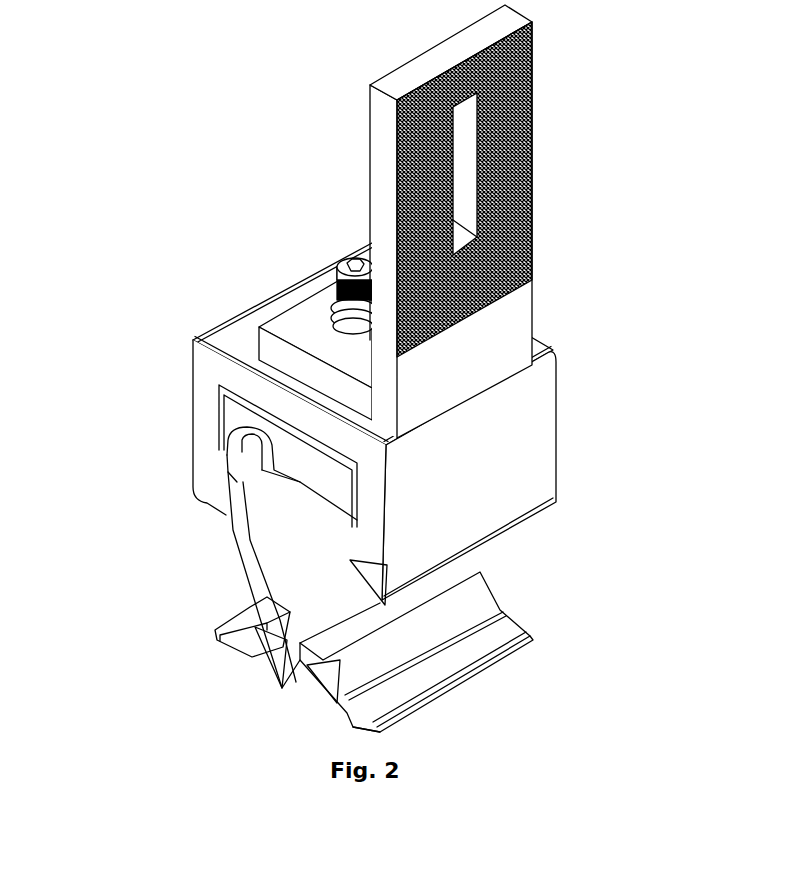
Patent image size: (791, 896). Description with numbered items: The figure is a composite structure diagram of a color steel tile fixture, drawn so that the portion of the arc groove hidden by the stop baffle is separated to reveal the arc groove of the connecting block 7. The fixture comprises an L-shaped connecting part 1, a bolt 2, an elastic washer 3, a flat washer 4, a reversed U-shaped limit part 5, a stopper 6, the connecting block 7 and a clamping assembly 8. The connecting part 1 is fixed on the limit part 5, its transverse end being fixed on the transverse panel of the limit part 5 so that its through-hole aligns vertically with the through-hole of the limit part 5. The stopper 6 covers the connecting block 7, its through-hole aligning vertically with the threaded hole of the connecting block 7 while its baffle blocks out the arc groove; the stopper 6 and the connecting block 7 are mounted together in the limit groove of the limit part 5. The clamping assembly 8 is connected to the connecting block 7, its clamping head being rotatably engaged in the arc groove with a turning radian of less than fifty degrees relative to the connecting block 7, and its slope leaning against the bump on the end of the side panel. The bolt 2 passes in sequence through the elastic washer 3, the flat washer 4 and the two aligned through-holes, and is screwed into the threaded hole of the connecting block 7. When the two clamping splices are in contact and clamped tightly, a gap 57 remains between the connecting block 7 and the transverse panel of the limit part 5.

The L-shaped connecting part 1 is at (515, 182).
The bolt 2 is at (350, 262).
The elastic washer 3 is at (345, 292).
The flat washer 4 is at (368, 335).
The reversed U-shaped limit part 5 is at (200, 403).
The stopper 6 is at (308, 470).
The connecting block 7 is at (272, 462).
The clamping assembly 8 is at (236, 575).
The gap 57 is at (310, 470).